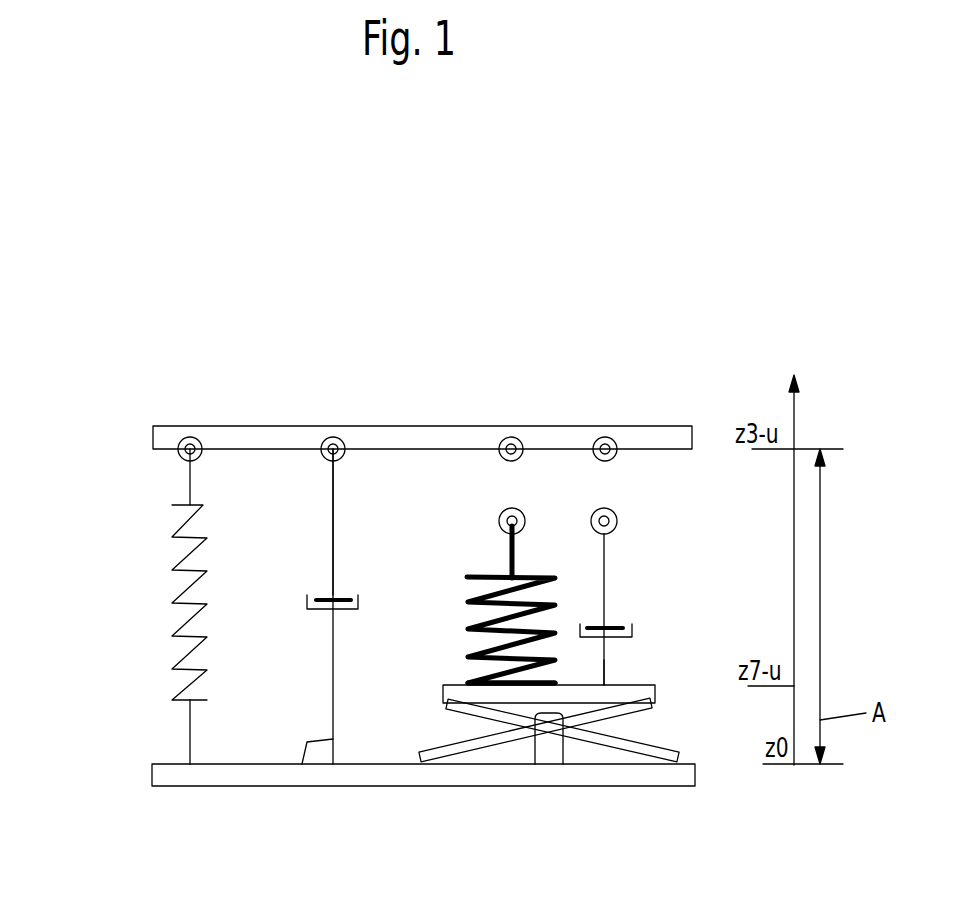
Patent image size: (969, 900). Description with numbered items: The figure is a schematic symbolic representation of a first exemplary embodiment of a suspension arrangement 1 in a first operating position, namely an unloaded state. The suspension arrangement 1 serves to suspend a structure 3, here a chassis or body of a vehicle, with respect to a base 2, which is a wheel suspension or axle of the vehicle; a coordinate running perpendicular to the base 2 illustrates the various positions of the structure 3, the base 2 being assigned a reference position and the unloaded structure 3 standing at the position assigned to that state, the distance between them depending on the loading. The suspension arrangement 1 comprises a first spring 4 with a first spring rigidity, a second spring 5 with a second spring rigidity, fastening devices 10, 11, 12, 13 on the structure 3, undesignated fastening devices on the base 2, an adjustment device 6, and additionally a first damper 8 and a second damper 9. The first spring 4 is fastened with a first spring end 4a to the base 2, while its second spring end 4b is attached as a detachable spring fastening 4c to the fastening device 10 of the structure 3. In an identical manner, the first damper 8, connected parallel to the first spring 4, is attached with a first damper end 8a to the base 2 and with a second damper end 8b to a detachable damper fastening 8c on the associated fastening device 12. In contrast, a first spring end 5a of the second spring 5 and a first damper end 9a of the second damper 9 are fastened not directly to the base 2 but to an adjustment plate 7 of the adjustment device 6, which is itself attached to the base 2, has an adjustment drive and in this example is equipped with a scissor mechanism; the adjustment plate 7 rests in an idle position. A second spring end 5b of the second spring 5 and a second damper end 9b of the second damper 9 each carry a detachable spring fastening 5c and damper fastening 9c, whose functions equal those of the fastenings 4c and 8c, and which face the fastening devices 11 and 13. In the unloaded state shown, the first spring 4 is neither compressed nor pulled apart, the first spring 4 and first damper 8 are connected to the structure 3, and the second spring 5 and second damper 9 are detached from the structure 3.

The suspension arrangement 1 is at (462, 345).
The base 2 is at (222, 778).
The structure 3 is at (265, 437).
The first spring 4 is at (175, 601).
The first spring end 4a is at (190, 738).
The second spring end 4b is at (189, 486).
The detachable spring fastening 4c is at (178, 451).
The second spring 5 is at (468, 577).
The first spring end 5a is at (540, 683).
The second spring end 5b is at (554, 452).
The detachable spring fastening 5c is at (514, 512).
The adjustment device 6 is at (543, 733).
The adjustment plate 7 is at (657, 690).
The first damper 8 is at (309, 612).
The first damper end 8a is at (307, 742).
The second damper end 8b is at (334, 488).
The detachable damper fastening 8c is at (330, 442).
The second damper 9 is at (632, 632).
The first damper end 9a is at (607, 681).
The second damper end 9b is at (615, 525).
The detachable damper fastening 9c is at (611, 513).
The fastening device 10 is at (200, 444).
The fastening device 11 is at (511, 437).
The fastening device 12 is at (340, 437).
The fastening device 13 is at (607, 436).